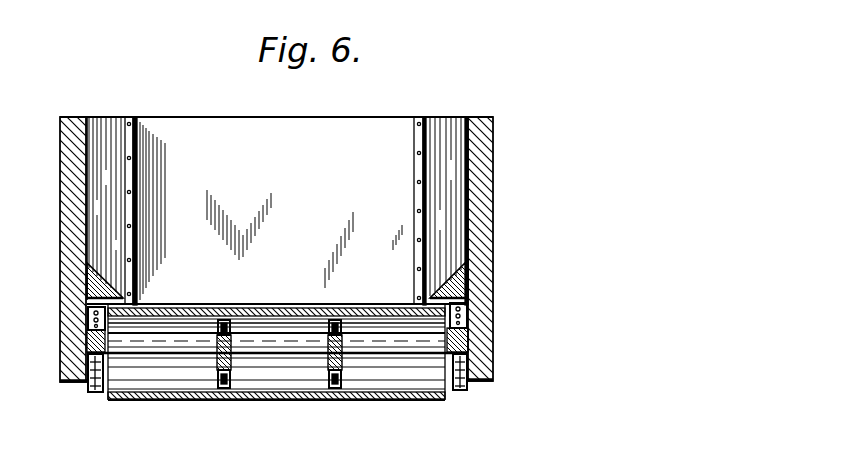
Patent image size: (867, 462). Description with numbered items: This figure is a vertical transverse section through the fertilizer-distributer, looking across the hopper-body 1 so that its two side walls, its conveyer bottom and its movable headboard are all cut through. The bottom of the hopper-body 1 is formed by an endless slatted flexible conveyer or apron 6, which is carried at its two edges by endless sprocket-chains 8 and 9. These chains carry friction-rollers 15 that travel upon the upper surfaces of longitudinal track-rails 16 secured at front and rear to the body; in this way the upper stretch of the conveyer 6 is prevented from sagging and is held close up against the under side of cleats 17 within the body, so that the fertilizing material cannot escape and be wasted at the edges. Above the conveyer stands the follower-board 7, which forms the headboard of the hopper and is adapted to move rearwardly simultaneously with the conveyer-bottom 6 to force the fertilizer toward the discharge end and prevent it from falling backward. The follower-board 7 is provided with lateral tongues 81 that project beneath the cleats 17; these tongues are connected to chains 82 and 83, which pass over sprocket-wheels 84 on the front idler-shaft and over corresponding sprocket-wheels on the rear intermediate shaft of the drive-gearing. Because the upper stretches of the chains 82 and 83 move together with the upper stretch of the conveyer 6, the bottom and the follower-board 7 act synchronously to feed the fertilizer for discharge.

The hopper-body 1 is at (98, 100).
The endless slatted flexible conveyer 6 is at (292, 384).
The follower-board 7 is at (275, 211).
The sprocket-chain 8 is at (230, 392).
The sprocket-chain 9 is at (343, 392).
The friction-rollers 15 is at (229, 299).
The track-rails 16 is at (240, 340).
The cleats 17 is at (87, 290).
The lateral tongues 81 is at (100, 302).
The chain 82 is at (97, 392).
The chain 83 is at (467, 388).
The sprocket-wheels 84 is at (72, 383).